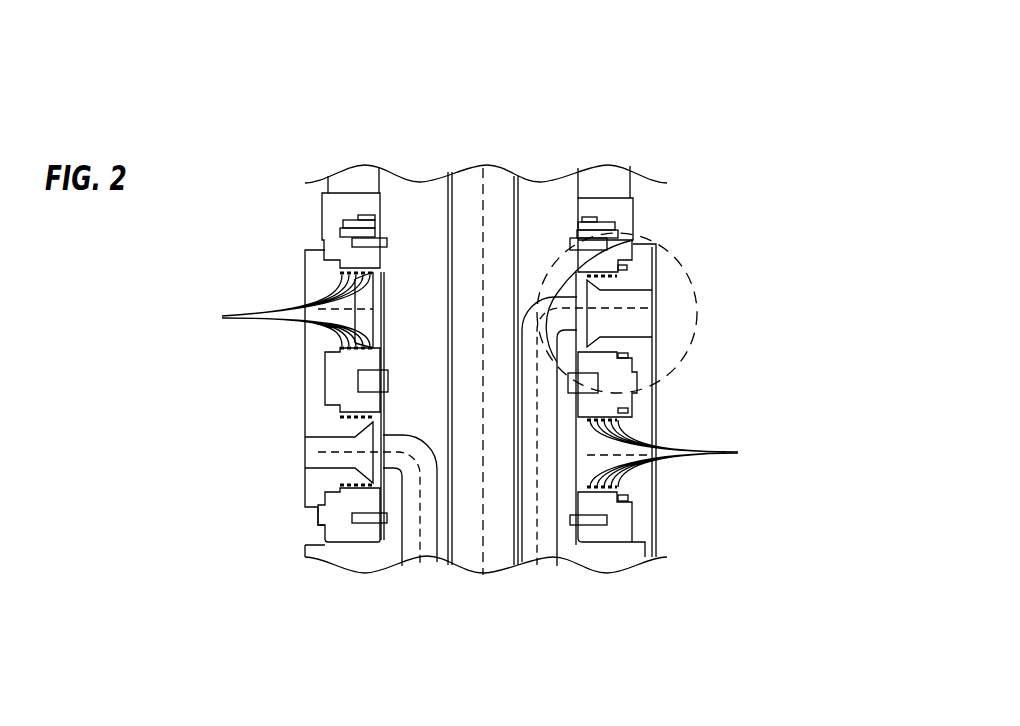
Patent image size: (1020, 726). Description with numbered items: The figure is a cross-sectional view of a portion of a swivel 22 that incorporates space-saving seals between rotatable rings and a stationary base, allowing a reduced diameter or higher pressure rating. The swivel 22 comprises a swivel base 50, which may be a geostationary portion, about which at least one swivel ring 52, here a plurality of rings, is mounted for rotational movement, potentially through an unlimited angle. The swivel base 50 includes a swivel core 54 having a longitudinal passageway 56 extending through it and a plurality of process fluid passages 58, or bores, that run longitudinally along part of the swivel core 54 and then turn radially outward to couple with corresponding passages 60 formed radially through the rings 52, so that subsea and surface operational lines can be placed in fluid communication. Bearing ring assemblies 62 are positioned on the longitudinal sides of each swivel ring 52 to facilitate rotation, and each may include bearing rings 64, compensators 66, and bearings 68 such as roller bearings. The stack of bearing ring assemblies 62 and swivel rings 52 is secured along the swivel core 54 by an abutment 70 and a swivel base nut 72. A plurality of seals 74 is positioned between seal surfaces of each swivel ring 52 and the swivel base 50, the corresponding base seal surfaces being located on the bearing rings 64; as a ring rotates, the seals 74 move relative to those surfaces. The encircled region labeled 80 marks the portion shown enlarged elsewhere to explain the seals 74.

The swivel 22 is at (752, 160).
The swivel base 50 is at (368, 100).
The swivel ring 52 is at (302, 353).
The swivel core 54 is at (541, 182).
The longitudinal passageway 56 is at (462, 188).
The process fluid passage 58 is at (405, 527).
The passage 60 is at (318, 442).
The bearing ring assembly 62 is at (312, 266).
The bearing ring 64 is at (350, 257).
The compensator 66 is at (350, 215).
The bearing 68 is at (634, 264).
The abutment 70 is at (598, 538).
The swivel base nut 72 is at (643, 244).
The seal 74 is at (300, 317).
The encircled enlarged portion 80 is at (633, 240).